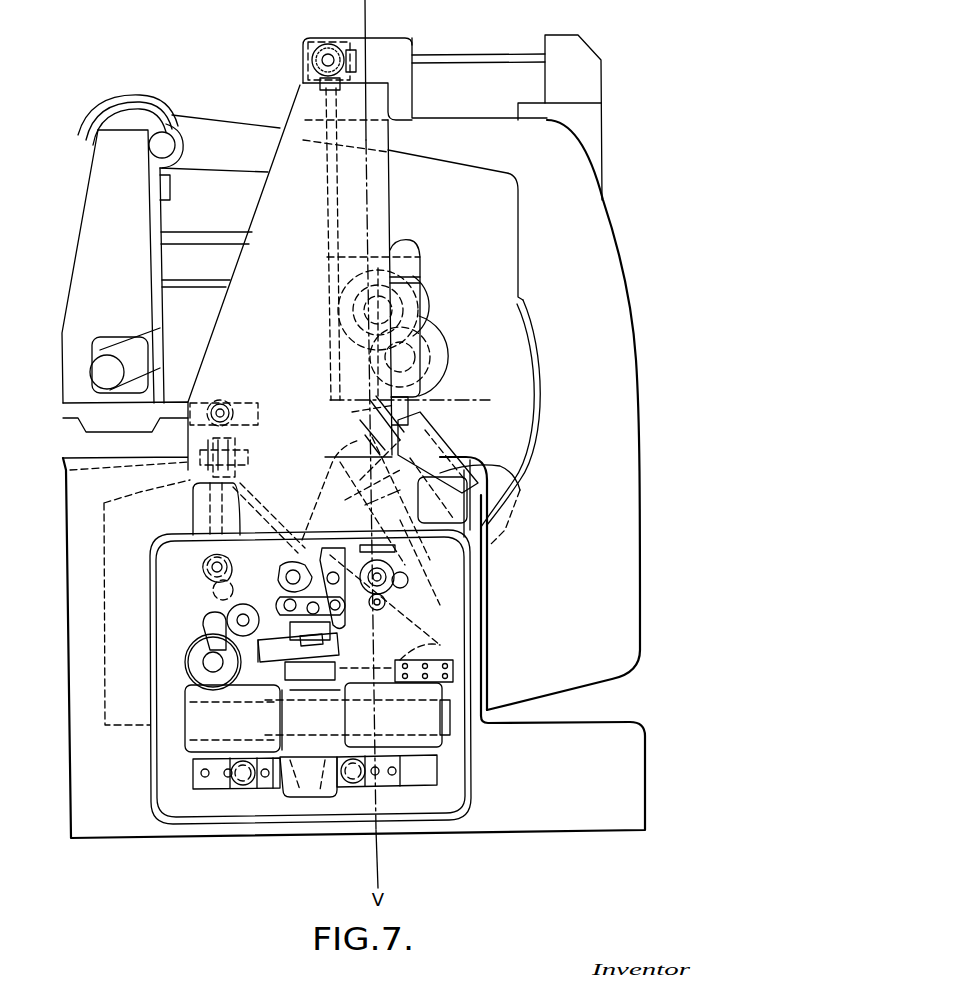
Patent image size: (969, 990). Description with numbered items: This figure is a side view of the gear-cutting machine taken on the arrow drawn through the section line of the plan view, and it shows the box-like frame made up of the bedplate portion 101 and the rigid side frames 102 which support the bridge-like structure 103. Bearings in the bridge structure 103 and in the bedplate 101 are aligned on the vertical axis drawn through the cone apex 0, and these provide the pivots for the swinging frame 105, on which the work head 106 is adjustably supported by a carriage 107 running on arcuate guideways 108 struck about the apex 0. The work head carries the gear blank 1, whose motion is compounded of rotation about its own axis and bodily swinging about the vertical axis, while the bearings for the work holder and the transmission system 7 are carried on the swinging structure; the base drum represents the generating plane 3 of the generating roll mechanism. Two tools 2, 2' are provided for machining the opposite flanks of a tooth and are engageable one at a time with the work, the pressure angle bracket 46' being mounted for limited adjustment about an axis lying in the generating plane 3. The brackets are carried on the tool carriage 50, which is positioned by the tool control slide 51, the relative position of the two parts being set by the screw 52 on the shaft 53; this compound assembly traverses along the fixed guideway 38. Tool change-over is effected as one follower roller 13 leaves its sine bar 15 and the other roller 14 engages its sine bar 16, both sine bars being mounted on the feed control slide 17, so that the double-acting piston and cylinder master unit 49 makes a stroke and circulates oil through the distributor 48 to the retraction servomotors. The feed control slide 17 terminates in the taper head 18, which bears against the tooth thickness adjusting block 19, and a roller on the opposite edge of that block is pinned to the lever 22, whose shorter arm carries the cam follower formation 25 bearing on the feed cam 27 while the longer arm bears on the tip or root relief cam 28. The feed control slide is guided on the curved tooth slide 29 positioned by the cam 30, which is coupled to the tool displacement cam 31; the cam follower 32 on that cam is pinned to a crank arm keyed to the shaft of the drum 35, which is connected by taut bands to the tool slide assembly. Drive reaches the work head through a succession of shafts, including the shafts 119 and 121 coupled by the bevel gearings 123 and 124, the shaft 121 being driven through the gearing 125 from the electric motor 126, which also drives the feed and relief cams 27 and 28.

The cone apex 0 is at (366, 407).
The gear blank 1 is at (410, 405).
The tool 2 is at (416, 334).
The tool 2' is at (397, 310).
The generating plane 3 is at (387, 408).
The transmission system 7 is at (316, 518).
The follower roller 13 is at (357, 784).
The follower roller 14 is at (245, 786).
The sine bar 15 is at (338, 748).
The sine bar 16 is at (352, 720).
The feed control slide 17 is at (285, 665).
The taper head 18 is at (340, 652).
The tooth thickness adjusting block 19 is at (292, 632).
The lever 22 is at (368, 622).
The cam follower formation 25 is at (390, 582).
The feed cam 27 is at (386, 602).
The tip or root relief cam 28 is at (283, 566).
The curved tooth slide 29 is at (178, 704).
The cam 30 is at (246, 604).
The tool displacement cam 31 is at (204, 560).
The cam follower 32 is at (200, 518).
The drum 35 is at (252, 441).
The fixed guideway 38 is at (124, 444).
The pressure angle bracket 46' is at (425, 318).
The distributor 48 is at (175, 145).
The double-acting piston and cylinder master unit 49 is at (455, 670).
The tool carriage 50 is at (172, 400).
The tool control slide 51 is at (190, 432).
The screw 52 is at (222, 405).
The shaft 53 is at (232, 408).
The bedplate portion 101 is at (600, 724).
The side frame 102 is at (487, 605).
The bridge-like structure 103 is at (302, 99).
The swinging frame 105 is at (598, 246).
The work head 106 is at (430, 430).
The carriage 107 is at (485, 486).
The arcuate guideways 108 is at (532, 364).
The shaft 119 is at (326, 180).
The shaft 121 is at (492, 58).
The bevel gearing 123 is at (305, 52).
The bevel gearing 124 is at (548, 80).
The gearing 125 is at (360, 500).
The electric motor 126 is at (481, 505).